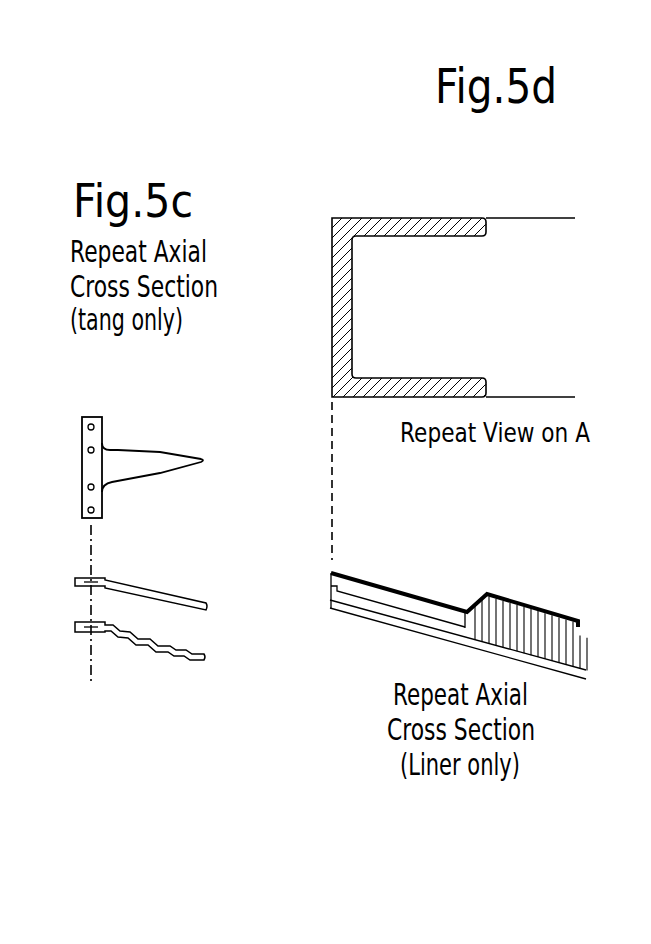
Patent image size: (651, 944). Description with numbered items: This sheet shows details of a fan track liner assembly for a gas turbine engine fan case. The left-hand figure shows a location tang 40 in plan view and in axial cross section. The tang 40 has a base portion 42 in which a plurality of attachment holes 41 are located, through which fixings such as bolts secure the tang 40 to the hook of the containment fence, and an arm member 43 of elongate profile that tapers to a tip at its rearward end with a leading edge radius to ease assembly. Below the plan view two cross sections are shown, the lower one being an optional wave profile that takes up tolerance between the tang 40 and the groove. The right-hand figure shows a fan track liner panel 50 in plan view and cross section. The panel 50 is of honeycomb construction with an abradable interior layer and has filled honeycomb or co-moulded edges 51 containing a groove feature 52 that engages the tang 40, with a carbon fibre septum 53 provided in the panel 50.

In FIG. 5C, the location tang 40 is at (120, 435).
In FIG. 5C, the attachment hole 41 is at (105, 449).
In FIG. 5C, the base portion 42 is at (91, 467).
In FIG. 5C, the arm member 43 is at (168, 461).
In FIG. 5D, the fan track liner panel 50 is at (485, 369).
In FIG. 5D, the co-moulded edge 51 is at (404, 217).
In FIG. 5D, the groove feature 52 is at (350, 591).
In FIG. 5D, the carbon fibre septum 53 is at (542, 650).